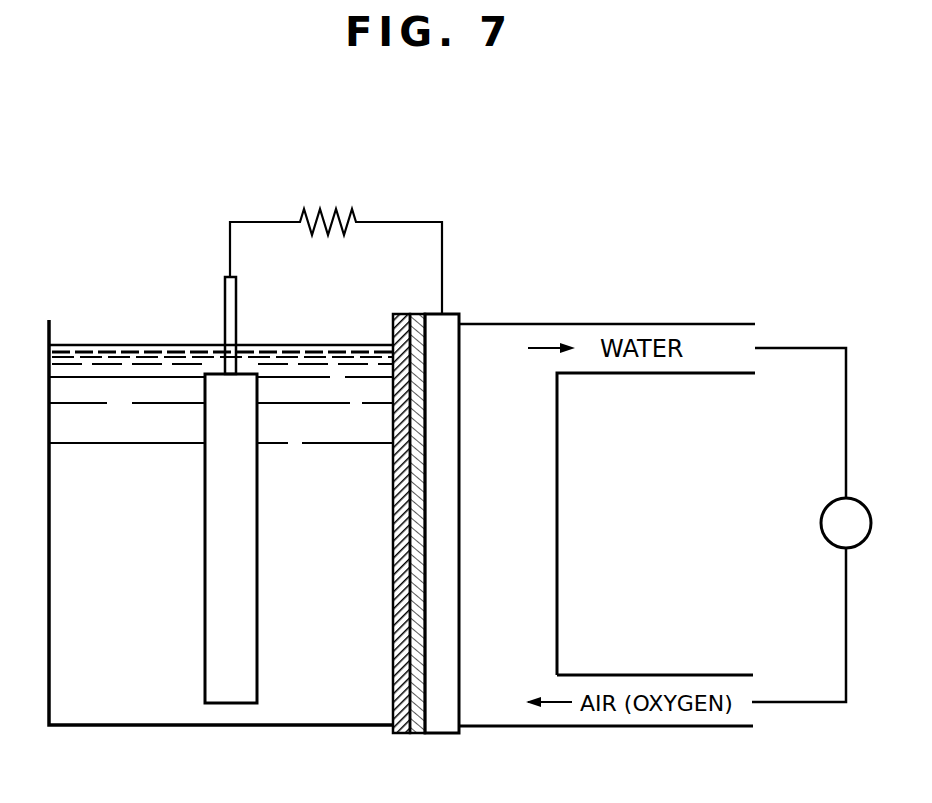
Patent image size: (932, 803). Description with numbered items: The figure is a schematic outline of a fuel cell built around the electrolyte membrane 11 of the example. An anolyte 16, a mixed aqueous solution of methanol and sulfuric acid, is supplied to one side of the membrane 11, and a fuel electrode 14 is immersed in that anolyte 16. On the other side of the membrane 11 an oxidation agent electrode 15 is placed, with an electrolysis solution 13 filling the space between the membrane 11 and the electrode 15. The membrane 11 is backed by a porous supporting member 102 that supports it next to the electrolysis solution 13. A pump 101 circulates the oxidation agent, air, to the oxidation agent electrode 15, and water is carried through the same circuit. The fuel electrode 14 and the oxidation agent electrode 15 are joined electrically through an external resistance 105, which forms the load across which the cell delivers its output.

The electrolyte membrane 11 is at (397, 735).
The electrolysis solution 13 is at (420, 314).
The fuel electrode 14 is at (212, 385).
The oxidation agent electrode 15 is at (444, 485).
The anolyte 16 is at (187, 708).
The pump 101 is at (862, 502).
The porous supporting member 102 is at (393, 582).
The external resistance 105 is at (350, 218).